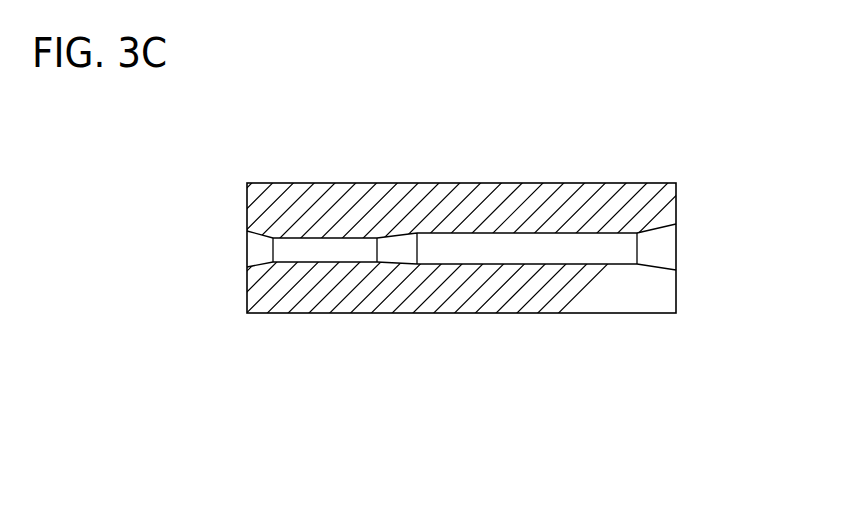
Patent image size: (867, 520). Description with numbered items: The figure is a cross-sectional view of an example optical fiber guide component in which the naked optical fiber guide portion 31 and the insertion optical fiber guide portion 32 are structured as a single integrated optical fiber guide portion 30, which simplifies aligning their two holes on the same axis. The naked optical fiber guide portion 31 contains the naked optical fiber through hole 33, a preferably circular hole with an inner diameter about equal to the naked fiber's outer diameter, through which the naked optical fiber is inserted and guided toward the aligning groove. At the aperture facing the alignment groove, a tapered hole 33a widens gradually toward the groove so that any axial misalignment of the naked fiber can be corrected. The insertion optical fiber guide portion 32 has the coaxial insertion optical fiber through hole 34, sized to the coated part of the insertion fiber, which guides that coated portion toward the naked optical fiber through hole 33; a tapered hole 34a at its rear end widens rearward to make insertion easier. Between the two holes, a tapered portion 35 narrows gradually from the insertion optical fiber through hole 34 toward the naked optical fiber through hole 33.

The integrated optical fiber guide portion 30 is at (672, 336).
The naked optical fiber guide portion 31 is at (378, 168).
The insertion optical fiber guide portion 32 is at (677, 168).
The naked optical fiber through hole 33 is at (323, 253).
The tapered hole 33a is at (255, 249).
The insertion optical fiber through hole 34 is at (538, 253).
The tapered hole 34a is at (665, 246).
The tapered portion 35 is at (397, 253).